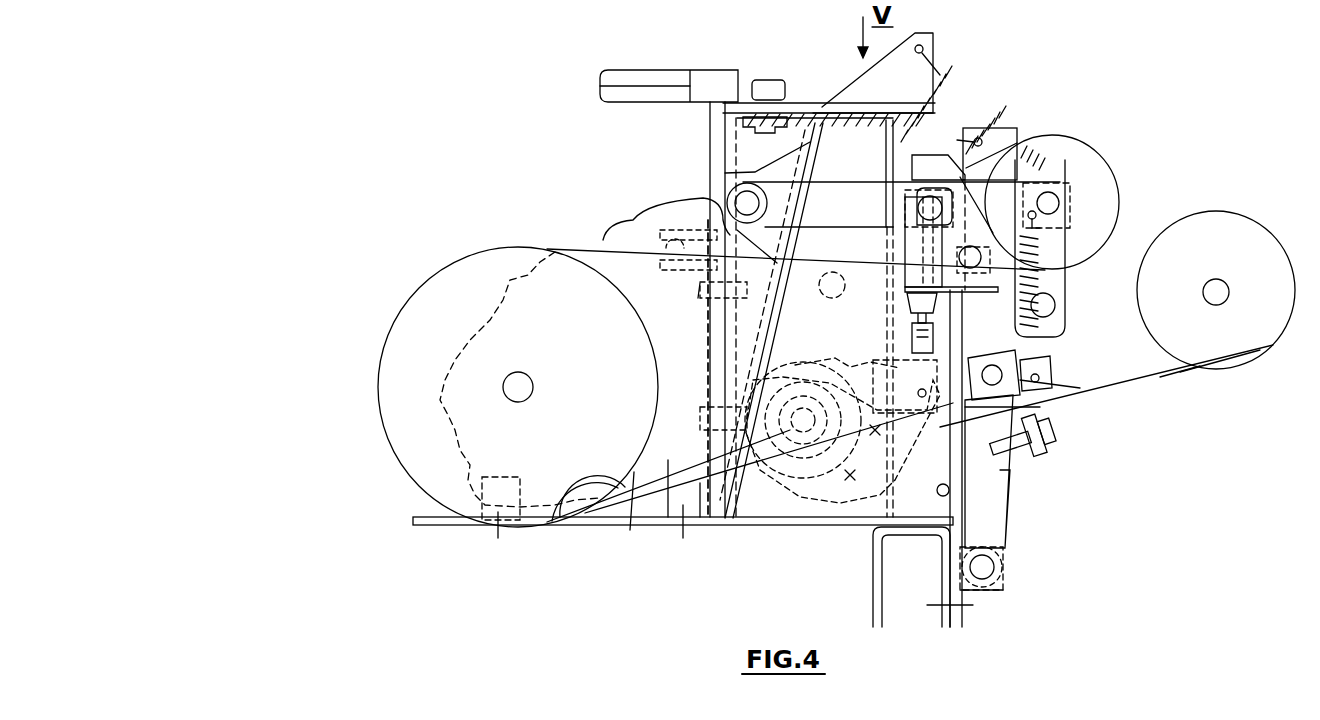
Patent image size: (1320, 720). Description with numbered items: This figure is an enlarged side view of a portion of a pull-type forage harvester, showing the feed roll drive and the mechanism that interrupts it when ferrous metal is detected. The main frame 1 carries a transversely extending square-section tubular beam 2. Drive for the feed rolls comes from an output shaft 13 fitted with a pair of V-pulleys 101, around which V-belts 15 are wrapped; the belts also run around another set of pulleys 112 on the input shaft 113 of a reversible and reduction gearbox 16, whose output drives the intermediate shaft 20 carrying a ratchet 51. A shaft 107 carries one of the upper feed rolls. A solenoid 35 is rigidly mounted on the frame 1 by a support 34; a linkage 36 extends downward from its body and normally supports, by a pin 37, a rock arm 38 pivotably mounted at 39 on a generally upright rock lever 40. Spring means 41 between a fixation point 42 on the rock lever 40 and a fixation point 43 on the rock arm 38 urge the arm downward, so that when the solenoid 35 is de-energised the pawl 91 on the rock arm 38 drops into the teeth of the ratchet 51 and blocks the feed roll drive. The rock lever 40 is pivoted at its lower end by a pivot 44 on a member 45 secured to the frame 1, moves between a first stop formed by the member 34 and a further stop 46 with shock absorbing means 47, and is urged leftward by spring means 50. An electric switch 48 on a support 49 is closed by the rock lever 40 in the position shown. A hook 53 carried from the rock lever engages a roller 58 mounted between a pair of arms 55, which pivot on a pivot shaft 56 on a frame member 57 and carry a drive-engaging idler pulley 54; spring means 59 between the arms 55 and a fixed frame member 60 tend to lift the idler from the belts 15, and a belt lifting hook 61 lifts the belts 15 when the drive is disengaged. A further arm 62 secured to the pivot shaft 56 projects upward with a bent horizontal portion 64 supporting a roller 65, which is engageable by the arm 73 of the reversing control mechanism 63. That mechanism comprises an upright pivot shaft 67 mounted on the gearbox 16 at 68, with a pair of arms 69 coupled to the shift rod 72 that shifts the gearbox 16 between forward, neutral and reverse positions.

The main frame 1 is at (955, 620).
The tubular beam 2 is at (870, 622).
The output shaft 13 is at (1222, 302).
The V-belts 15 is at (1187, 378).
The reversible and reduction gearbox 16 is at (600, 243).
The intermediate shaft 20 is at (813, 440).
The support 34 is at (905, 297).
The solenoid 35 is at (905, 272).
The linkage 36 is at (912, 337).
The pin 37 is at (1040, 410).
The rock arm 38 is at (1020, 348).
The pivot 39 is at (1040, 383).
The rock lever 40 is at (993, 127).
The spring means 41 is at (1033, 340).
The fixation point 42 is at (1036, 217).
The fixation point 43 is at (1080, 388).
The pivot 44 is at (997, 563).
The member 45 is at (1003, 590).
The stop 46 is at (1045, 445).
The shock absorbing means 47 is at (1020, 460).
The electric switch 48 is at (1045, 270).
The support 49 is at (1030, 338).
The spring means 50 is at (933, 132).
The ratchet 51 is at (768, 462).
The hook 53 is at (1012, 128).
The idler pulley 54 is at (1119, 190).
The arms 55 is at (843, 182).
The pivot shaft 56 is at (723, 187).
The member 57 is at (782, 278).
The roller 58 is at (905, 225).
The spring means 59 is at (1000, 117).
The fixed member 60 is at (933, 50).
The belt lifting hook 61 is at (1050, 312).
The further arm 62 is at (710, 158).
The reversing control mechanism 63 is at (707, 67).
The bent portion 64 is at (813, 110).
The roller 65 is at (783, 100).
The pivot shaft 67 is at (706, 348).
The pivot mounting 68 is at (705, 300).
The arms 69 is at (660, 234).
The shift rod 72 is at (662, 265).
The arm 73 is at (652, 102).
The pawl 91 is at (847, 365).
The V-pulleys 101 is at (1198, 367).
The shaft 107 is at (826, 300).
The pulleys 112 is at (632, 500).
The input shaft 113 is at (524, 400).